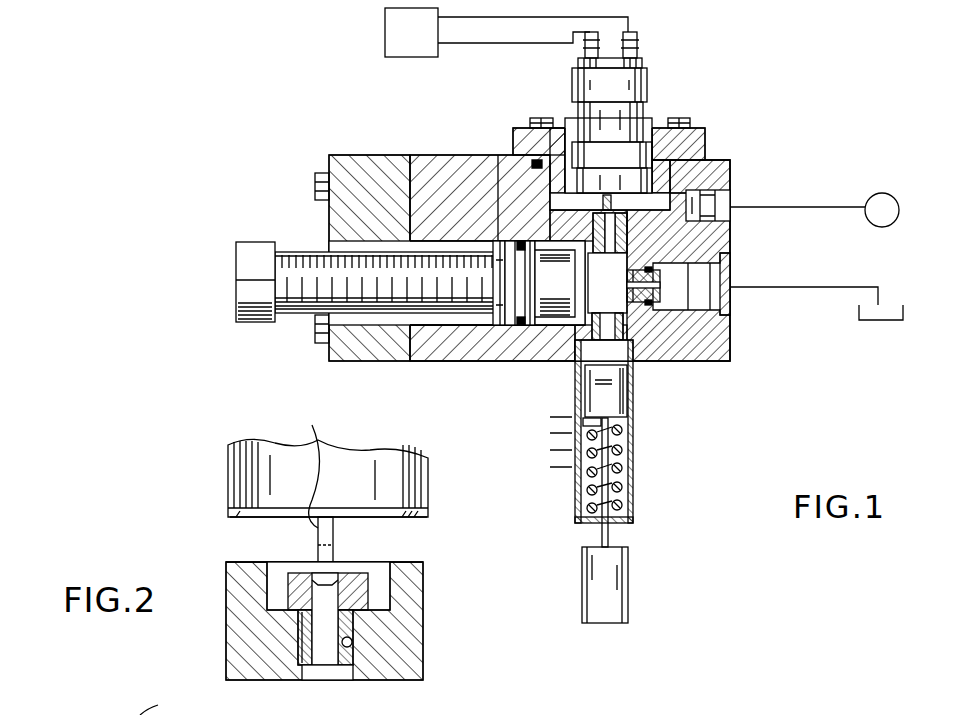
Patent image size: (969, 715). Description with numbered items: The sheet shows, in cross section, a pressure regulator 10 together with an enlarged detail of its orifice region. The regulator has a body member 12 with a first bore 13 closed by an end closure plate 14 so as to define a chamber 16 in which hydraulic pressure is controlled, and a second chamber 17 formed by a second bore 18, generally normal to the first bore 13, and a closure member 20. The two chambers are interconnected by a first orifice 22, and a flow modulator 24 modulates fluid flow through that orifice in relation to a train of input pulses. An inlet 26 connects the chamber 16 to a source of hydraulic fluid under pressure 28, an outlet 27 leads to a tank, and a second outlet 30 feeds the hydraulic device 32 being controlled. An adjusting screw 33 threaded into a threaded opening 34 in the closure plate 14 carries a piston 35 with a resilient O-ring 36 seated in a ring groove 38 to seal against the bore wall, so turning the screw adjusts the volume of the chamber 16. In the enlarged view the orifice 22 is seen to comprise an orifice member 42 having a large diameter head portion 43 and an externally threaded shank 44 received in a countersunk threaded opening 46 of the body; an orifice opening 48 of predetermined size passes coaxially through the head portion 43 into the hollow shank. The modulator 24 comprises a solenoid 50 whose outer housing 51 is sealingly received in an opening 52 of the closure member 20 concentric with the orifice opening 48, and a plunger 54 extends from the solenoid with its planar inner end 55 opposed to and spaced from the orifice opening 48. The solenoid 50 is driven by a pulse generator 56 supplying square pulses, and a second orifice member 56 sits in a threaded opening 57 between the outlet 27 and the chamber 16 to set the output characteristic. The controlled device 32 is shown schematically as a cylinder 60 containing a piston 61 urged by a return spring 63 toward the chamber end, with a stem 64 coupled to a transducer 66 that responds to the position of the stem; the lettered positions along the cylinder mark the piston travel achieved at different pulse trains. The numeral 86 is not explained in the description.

In FIG. 1, the pressure regulator 10 is at (403, 116).
In FIG. 1, the body member 12 is at (462, 155).
In FIG. 1, the first bore 13 is at (423, 323).
In FIG. 1, the end closure plate 14 is at (350, 163).
In FIG. 1, the chamber 16 is at (545, 328).
In FIG. 2, the chamber 16 is at (342, 713).
In FIG. 1, the second chamber 17 is at (672, 124).
In FIG. 1, the second bore 18 is at (553, 168).
In FIG. 1, the closure member 20 is at (705, 137).
In FIG. 2, the closure member 20 is at (214, 545).
In FIG. 1, the first orifice 22 is at (730, 162).
In FIG. 2, the first orifice 22 is at (427, 552).
In FIG. 1, the flow modulator 24 is at (610, 115).
In FIG. 1, the inlet 26 is at (730, 216).
In FIG. 1, the outlet 27 is at (730, 273).
In FIG. 1, the source of hydraulic fluid under pressure 28 is at (881, 193).
In FIG. 1, the second outlet 30 is at (655, 296).
In FIG. 1, the hydraulic device 32 is at (635, 417).
In FIG. 1, the adjusting screw 33 is at (293, 252).
In FIG. 1, the threaded opening 34 is at (313, 313).
In FIG. 1, the piston 35 is at (500, 240).
In FIG. 1, the resilient O-ring 36 is at (530, 326).
In FIG. 1, the ring groove 38 is at (466, 240).
In FIG. 2, the orifice member 42 is at (287, 567).
In FIG. 2, the head portion 43 is at (287, 593).
In FIG. 2, the externally threaded shank 44 is at (298, 638).
In FIG. 2, the countersunk threaded opening 46 is at (350, 645).
In FIG. 2, the orifice opening 48 is at (343, 573).
In FIG. 2, the solenoid 50 is at (281, 465).
In FIG. 2, the outer housing 51 is at (227, 481).
In FIG. 1, the opening 52 is at (633, 200).
In FIG. 2, the plunger 54 is at (316, 481).
In FIG. 2, the planar inner end 55 is at (317, 563).
In FIG. 1, the pulse generator 56 is at (385, 33).
In FIG. 1, the threaded opening 57 is at (637, 307).
In FIG. 1, the cylinder 60 is at (633, 470).
In FIG. 1, the piston 61 is at (610, 395).
In FIG. 1, the return spring 63 is at (582, 478).
In FIG. 1, the stem 64 is at (605, 498).
In FIG. 1, the transducer 66 is at (622, 607).
In FIG. 2, the conduit 86 is at (164, 701).